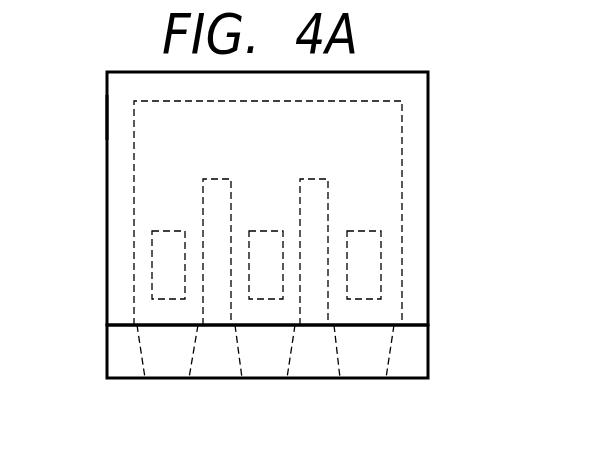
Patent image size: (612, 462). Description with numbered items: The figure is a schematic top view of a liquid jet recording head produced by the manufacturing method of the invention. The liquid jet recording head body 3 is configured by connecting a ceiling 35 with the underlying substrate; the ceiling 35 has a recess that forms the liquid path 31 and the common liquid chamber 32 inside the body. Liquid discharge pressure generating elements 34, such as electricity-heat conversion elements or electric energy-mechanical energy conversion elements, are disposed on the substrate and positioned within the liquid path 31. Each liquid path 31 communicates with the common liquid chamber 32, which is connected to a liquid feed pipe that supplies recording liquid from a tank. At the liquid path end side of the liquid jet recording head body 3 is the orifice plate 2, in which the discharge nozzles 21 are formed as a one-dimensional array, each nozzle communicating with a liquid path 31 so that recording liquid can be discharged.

The orifice plate 2 is at (415, 352).
The liquid jet recording head body 3 is at (439, 81).
The discharge nozzles 21 is at (367, 363).
The liquid path 31 is at (380, 203).
The common liquid chamber 32 is at (382, 146).
The liquid discharge pressure generating elements 34 is at (367, 282).
The ceiling 35 is at (117, 118).